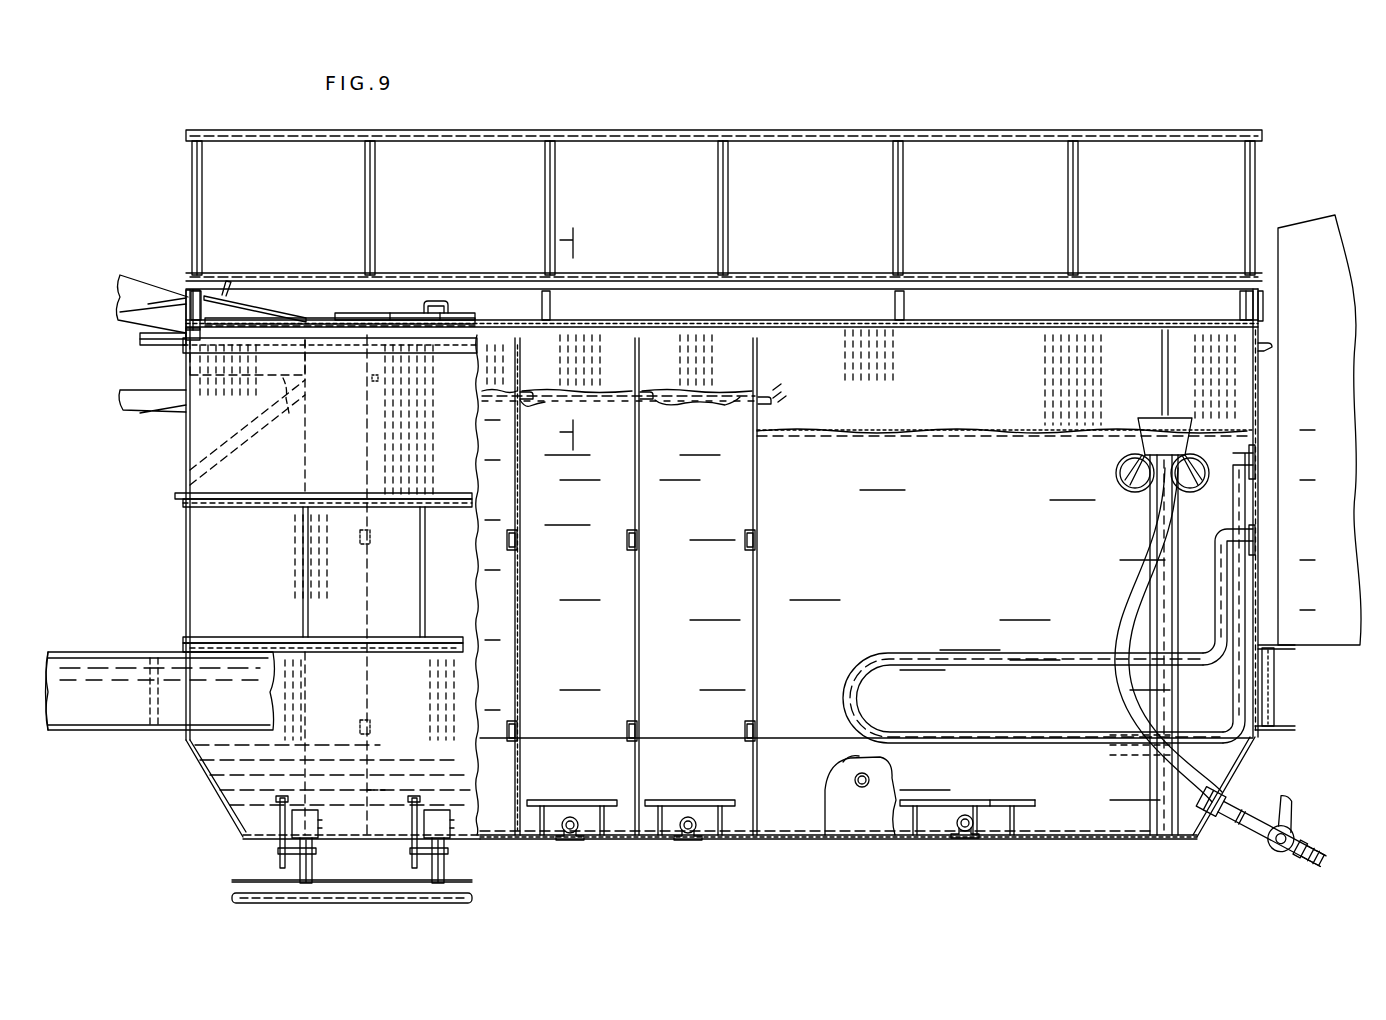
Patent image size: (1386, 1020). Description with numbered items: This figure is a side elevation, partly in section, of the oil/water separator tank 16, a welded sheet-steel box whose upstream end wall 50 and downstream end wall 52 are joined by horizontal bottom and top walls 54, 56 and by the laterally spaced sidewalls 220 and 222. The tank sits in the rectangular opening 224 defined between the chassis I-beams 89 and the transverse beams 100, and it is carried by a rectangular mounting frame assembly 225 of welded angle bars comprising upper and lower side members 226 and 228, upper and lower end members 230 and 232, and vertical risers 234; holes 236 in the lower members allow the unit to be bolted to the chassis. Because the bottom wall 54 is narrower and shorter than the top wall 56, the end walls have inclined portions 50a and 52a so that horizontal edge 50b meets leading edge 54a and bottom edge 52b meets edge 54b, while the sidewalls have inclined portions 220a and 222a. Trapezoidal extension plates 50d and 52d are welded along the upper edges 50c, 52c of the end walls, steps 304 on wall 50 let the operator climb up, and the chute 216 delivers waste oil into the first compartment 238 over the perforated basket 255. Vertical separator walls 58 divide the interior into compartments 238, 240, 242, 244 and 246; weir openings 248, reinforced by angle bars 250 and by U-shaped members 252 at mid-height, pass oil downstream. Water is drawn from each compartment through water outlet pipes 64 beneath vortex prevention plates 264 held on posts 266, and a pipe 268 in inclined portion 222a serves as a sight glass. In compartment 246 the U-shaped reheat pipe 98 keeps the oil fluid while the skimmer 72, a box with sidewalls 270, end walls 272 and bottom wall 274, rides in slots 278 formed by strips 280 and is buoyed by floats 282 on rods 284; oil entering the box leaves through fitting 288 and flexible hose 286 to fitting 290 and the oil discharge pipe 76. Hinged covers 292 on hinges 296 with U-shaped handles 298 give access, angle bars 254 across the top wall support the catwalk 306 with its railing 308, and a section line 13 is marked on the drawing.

The separator tank 16 is at (1162, 116).
The catwalk 306 is at (921, 126).
The railing 308 is at (865, 130).
The angle bars 254 is at (205, 295).
The chute 216 is at (170, 280).
The U-shaped handle 298 is at (436, 302).
The hinged rectangular cover 292 is at (475, 314).
The hinge 296 is at (401, 319).
The section line FIG. 13 is at (582, 339).
The trapezoidal extension plate 50d is at (173, 307).
The steps 304 is at (140, 344).
The upper edge of end wall 50c is at (185, 348).
The upstream end wall 50 is at (187, 579).
The inclined bottom portion of end wall 50a is at (218, 785).
The horizontal bottom edge of end wall 50b is at (243, 835).
The bottom wall 54 is at (635, 840).
The leading edge of bottom wall 54a is at (240, 868).
The downstream edge of bottom wall 54b is at (1205, 840).
The downstream end wall 52 is at (1260, 388).
The inclined portion of end wall 52a is at (1240, 766).
The bottom edge of end wall 52b is at (1205, 843).
The upper edge of end wall 52c is at (1266, 326).
The trapezoidal extension plate 52d is at (1264, 306).
The rectangular opening 224 is at (1277, 646).
The transverse beams 100 is at (160, 730).
The I-beams 89 is at (97, 655).
The upper end member 230 is at (180, 494).
The lower end member 232 is at (182, 636).
The mounting frame assembly 225 is at (279, 493).
The perforated basket 255 is at (286, 412).
The upper side member 226 is at (442, 493).
The vertical risers 234 is at (304, 597).
The holes 236 is at (242, 638).
The sidewall 222 is at (460, 426).
The lower side member 228 is at (460, 652).
The first compartment 238 is at (290, 789).
The second compartment 240 is at (505, 621).
The compartment separator walls 58 is at (620, 638).
The third compartment 242 is at (600, 496).
The fourth compartment 244 is at (710, 496).
The downstream compartment 246 is at (955, 511).
The weir openings 248 is at (640, 388).
The reinforcement angle bars 250 is at (630, 411).
The U-shaped reinforcing members 252 is at (619, 557).
The top wall 56 is at (762, 325).
The sidewall 220 is at (970, 340).
The skimmer 72 is at (1140, 422).
The skimmer sidewalls 270 is at (1200, 452).
The skimmer end walls 272 is at (1147, 418).
The skimmer bottom wall 274 is at (1155, 495).
The fitting 288 is at (1175, 502).
The flexible hose 286 is at (1135, 582).
The angle bars or strips 280 is at (1168, 620).
The mounting bars or rods 284 is at (1258, 450).
The floats 282 is at (1127, 492).
The U-shaped pipe 98 is at (958, 655).
The fitting 290 is at (1208, 798).
The oil discharge pipe 76 is at (1323, 850).
The vortex prevention plate 264 is at (575, 802).
The vertical posts 266 is at (675, 802).
The water outlet pipes 64 is at (576, 820).
The sight glass pipe 268 is at (853, 781).
The inclined sidewall portion 222a is at (476, 838).
The inclined sidewall portion 220a is at (790, 838).
The vertical slots 278 is at (1167, 327).